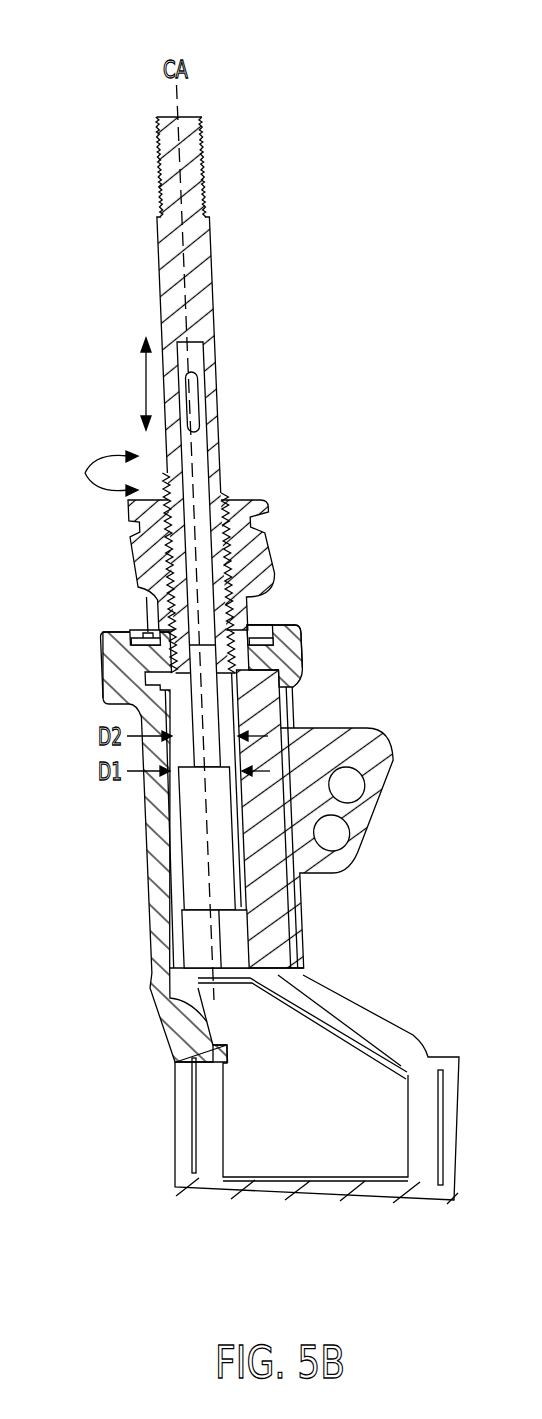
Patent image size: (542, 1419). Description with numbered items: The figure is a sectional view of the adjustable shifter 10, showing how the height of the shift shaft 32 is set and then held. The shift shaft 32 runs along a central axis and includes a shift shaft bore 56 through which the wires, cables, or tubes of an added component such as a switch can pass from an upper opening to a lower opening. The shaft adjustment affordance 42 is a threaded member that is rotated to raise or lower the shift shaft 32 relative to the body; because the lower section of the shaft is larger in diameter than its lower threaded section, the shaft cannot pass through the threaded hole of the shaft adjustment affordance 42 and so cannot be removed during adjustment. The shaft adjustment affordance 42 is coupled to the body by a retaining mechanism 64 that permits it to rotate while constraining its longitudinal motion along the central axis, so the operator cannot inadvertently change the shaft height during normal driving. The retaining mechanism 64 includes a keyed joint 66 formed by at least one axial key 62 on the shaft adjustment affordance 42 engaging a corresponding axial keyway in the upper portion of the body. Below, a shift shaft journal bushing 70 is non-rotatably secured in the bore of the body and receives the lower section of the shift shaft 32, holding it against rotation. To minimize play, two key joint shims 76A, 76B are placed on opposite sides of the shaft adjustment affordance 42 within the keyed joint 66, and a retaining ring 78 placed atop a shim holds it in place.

The adjustable shifter 10 is at (395, 41).
The shift shaft 32 is at (216, 323).
The shaft adjustment affordance 42 is at (273, 547).
The shift shaft bore 56 is at (221, 868).
The axial key 62 is at (288, 648).
The retaining mechanism 64 is at (89, 628).
The keyed joint 66 is at (278, 605).
The shift shaft journal bushing 70 is at (277, 690).
The key joint shim 76A is at (304, 631).
The key joint shim 76B is at (128, 630).
The retaining ring 78 is at (153, 638).